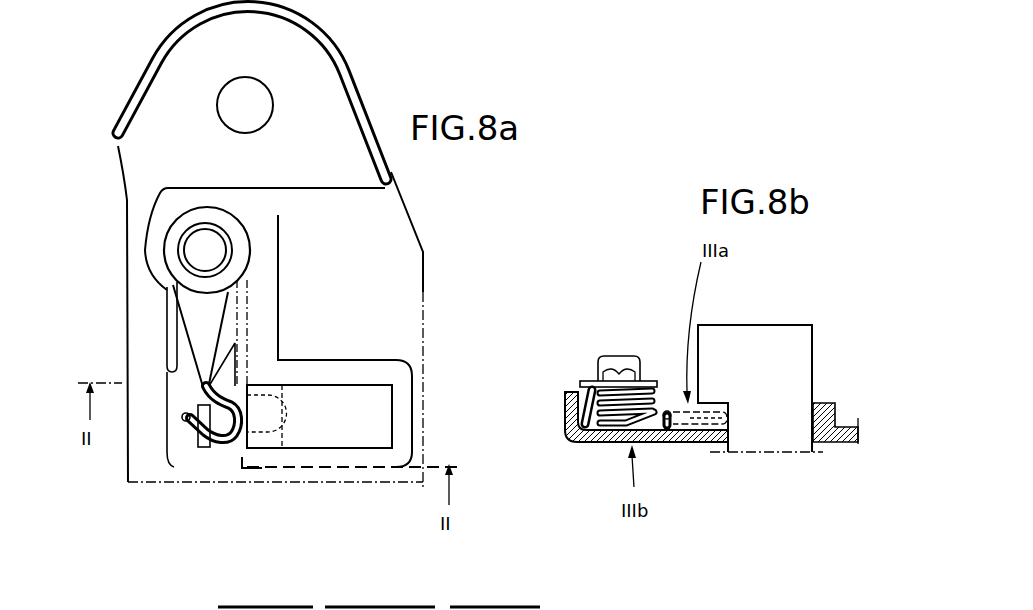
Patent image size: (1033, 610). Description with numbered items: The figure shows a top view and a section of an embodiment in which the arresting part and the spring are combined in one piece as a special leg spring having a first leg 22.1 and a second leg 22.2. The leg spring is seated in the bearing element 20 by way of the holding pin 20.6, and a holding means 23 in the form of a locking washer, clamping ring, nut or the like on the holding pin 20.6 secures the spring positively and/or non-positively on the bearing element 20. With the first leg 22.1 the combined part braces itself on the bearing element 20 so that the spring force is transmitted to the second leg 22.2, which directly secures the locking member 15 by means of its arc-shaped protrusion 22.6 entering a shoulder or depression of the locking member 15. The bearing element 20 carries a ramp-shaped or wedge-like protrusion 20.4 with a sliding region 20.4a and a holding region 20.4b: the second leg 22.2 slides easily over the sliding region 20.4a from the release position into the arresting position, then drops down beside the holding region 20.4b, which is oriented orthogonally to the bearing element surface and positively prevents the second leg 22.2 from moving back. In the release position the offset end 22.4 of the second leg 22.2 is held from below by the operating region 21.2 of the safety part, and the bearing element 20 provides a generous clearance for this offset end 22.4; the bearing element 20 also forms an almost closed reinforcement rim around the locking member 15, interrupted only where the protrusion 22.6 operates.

In FIG. 8a, the locking member 15 is at (333, 428).
In FIG. 8b, the locking member 15 is at (761, 371).
In FIG. 8a, the bearing element 20 is at (307, 97).
In FIG. 8b, the bearing element 20 is at (828, 403).
In FIG. 8b, the protrusion 20.4 is at (666, 410).
In FIG. 8a, the sliding region 20.4a is at (225, 373).
In FIG. 8b, the sliding region 20.4a is at (662, 426).
In FIG. 8a, the holding region 20.4b is at (235, 358).
In FIG. 8b, the holding region 20.4b is at (676, 432).
In FIG. 8a, the holding pin 20.6 is at (202, 245).
In FIG. 8b, the holding pin 20.6 is at (620, 360).
In FIG. 8a, the operating region 21.2 is at (199, 406).
In FIG. 8a, the first leg 22.1 is at (177, 298).
In FIG. 8b, the first leg 22.1 is at (572, 438).
In FIG. 8a, the second leg 22.2 is at (225, 305).
In FIG. 8b, the second leg 22.2 is at (717, 417).
In FIG. 8a, the offset end 22.4 is at (187, 422).
In FIG. 8a, the arc-shaped protrusion 22.6 is at (215, 445).
In FIG. 8a, the holding means 23 is at (198, 217).
In FIG. 8b, the holding means 23 is at (588, 380).